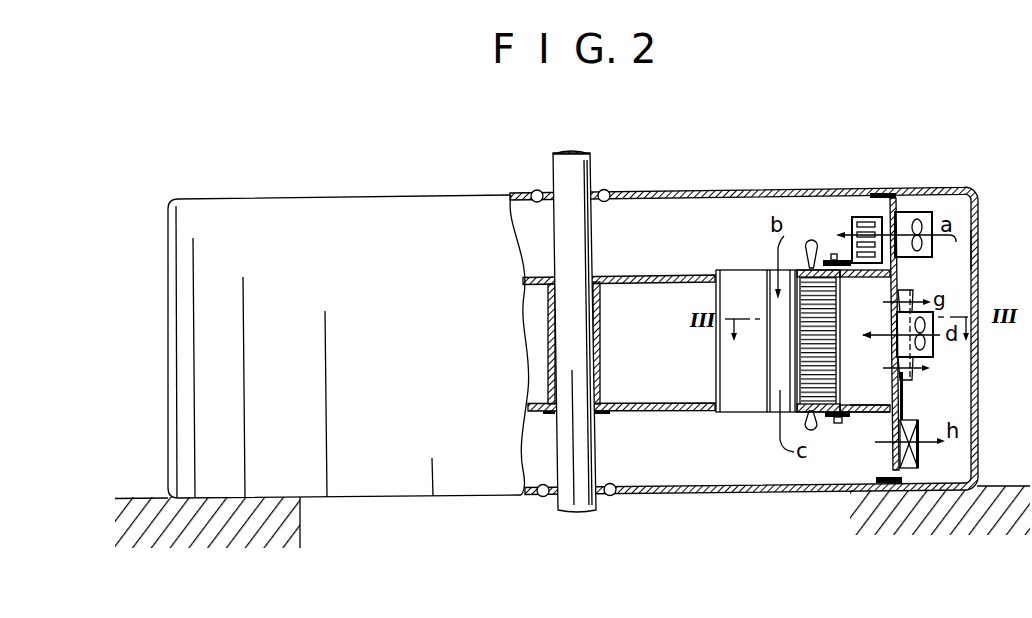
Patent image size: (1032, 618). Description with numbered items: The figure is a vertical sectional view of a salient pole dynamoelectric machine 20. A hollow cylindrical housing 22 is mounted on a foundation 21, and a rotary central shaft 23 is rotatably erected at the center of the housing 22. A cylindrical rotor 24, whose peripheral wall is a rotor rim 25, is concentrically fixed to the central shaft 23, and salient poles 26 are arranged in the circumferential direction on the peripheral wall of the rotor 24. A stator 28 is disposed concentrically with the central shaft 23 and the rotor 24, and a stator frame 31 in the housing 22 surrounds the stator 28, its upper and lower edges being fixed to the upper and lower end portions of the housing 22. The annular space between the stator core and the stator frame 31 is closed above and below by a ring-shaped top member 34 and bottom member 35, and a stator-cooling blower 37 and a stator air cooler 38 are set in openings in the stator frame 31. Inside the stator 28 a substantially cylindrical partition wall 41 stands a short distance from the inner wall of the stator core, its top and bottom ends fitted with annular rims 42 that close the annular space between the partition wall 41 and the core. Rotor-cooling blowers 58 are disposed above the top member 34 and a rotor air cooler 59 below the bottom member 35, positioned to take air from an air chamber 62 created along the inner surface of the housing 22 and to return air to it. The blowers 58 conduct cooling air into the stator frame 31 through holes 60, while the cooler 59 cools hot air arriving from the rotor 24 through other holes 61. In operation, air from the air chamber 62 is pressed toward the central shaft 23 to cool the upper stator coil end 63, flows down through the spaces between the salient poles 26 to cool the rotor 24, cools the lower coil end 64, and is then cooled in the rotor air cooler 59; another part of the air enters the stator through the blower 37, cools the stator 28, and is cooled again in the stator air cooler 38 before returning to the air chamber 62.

The salient pole dynamoelectric machine 20 is at (925, 184).
The foundation 21 is at (950, 515).
The housing 22 is at (695, 494).
The rotary central shaft 23 is at (580, 501).
The rotor 24 is at (667, 275).
The rotor rim 25 is at (737, 406).
The salient poles 26 is at (779, 406).
The stator 28 is at (873, 414).
The stator frame 31 is at (904, 397).
The top member 34 is at (848, 262).
The bottom member 35 is at (867, 414).
The stator-cooling blower 37 is at (934, 351).
The stator air cooler 38 is at (911, 291).
The partition wall 41 is at (798, 366).
The annular rims 42 is at (824, 438).
The rotor-cooling blowers 58 is at (931, 213).
The rotor air cooler 59 is at (921, 456).
The holes 60 is at (887, 216).
The other holes 61 is at (897, 462).
The air chamber 62 is at (970, 251).
The upper stator coil end 63 is at (809, 240).
The lower coil end 64 is at (833, 426).